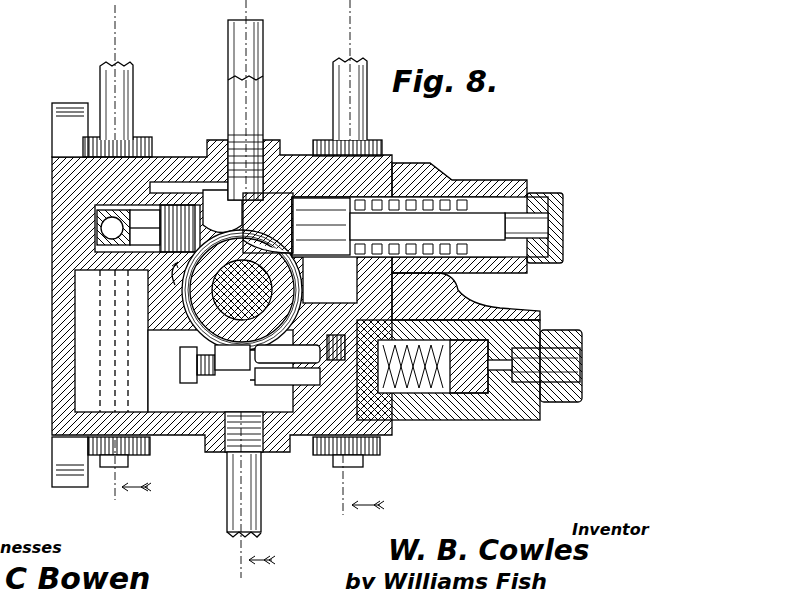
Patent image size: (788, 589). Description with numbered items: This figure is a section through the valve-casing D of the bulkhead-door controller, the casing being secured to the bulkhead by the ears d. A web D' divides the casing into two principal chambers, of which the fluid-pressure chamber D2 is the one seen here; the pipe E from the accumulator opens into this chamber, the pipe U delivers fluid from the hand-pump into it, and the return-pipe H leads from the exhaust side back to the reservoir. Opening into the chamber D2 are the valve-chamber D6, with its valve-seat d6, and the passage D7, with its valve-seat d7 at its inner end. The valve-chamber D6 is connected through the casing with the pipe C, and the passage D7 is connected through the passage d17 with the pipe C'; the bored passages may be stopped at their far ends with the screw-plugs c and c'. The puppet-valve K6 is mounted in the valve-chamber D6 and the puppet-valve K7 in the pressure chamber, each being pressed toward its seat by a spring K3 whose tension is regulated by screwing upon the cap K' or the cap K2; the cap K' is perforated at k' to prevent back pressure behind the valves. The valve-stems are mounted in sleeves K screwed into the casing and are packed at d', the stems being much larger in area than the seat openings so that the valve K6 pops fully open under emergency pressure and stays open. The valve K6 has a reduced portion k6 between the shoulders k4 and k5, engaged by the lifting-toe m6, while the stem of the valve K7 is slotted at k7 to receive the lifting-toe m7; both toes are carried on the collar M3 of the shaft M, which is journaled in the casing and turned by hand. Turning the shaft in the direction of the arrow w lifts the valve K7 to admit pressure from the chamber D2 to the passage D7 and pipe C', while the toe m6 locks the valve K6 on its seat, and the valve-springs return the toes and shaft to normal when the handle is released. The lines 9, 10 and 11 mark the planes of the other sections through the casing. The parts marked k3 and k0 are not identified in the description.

The valve-casing D is at (252, 296).
The ears d is at (51, 293).
The pipe C' is at (124, 81).
The return-pipe H is at (258, 56).
The pipe E is at (243, 95).
The pipe C is at (350, 78).
The passage D7 is at (98, 228).
The passage d17 is at (95, 215).
The valve-seat d7 is at (160, 190).
The lifting-toe m7 is at (205, 195).
The puppet-valve K7 is at (278, 192).
The perforation k' is at (415, 299).
The shaft M is at (255, 288).
The collar M3 is at (200, 308).
The arrow w is at (165, 286).
The passage k3 is at (298, 462).
The web D' is at (171, 354).
The lifting-toe m6 is at (238, 435).
The screw-plug c' is at (119, 466).
The section plane 11 is at (125, 480).
The pipe U is at (226, 528).
The section plane 9 is at (254, 572).
The screw-plug c is at (346, 466).
The valve-chamber D6 is at (355, 454).
The section plane 10 is at (356, 499).
The valve-seat d6 is at (322, 455).
The shoulder k4 is at (292, 452).
The reduced portion k6 is at (204, 435).
The shoulder k5 is at (188, 440).
The fluid-pressure chamber D2 is at (168, 390).
The sleeve K is at (420, 297).
The port k0 is at (365, 180).
The packing d' is at (447, 292).
The cap K2 is at (565, 210).
The slot k7 is at (422, 147).
The spring K3 is at (452, 338).
The cap K' is at (499, 361).
The puppet-valve K6 is at (393, 428).